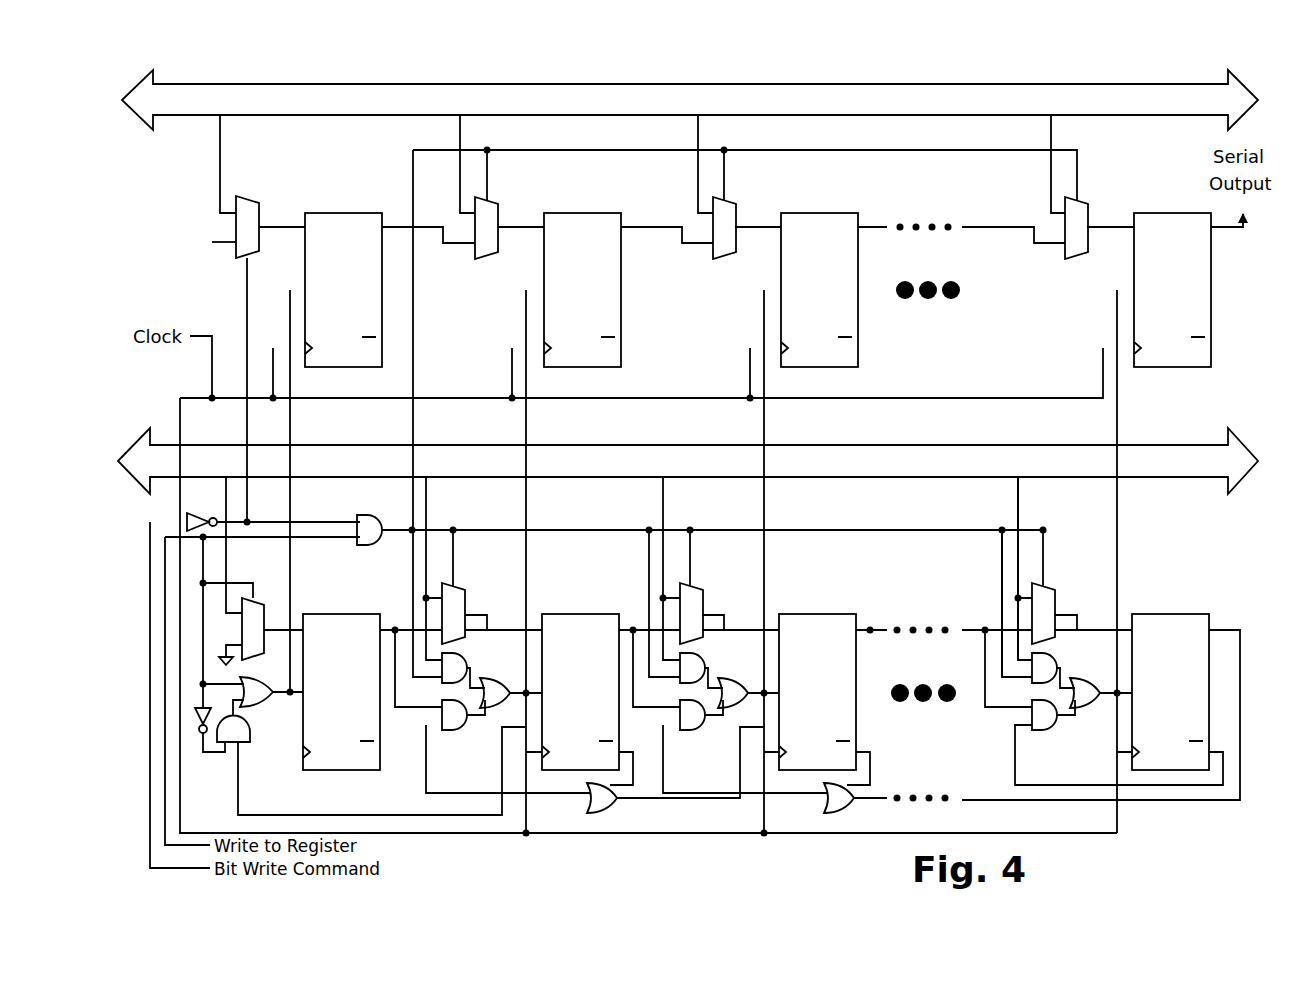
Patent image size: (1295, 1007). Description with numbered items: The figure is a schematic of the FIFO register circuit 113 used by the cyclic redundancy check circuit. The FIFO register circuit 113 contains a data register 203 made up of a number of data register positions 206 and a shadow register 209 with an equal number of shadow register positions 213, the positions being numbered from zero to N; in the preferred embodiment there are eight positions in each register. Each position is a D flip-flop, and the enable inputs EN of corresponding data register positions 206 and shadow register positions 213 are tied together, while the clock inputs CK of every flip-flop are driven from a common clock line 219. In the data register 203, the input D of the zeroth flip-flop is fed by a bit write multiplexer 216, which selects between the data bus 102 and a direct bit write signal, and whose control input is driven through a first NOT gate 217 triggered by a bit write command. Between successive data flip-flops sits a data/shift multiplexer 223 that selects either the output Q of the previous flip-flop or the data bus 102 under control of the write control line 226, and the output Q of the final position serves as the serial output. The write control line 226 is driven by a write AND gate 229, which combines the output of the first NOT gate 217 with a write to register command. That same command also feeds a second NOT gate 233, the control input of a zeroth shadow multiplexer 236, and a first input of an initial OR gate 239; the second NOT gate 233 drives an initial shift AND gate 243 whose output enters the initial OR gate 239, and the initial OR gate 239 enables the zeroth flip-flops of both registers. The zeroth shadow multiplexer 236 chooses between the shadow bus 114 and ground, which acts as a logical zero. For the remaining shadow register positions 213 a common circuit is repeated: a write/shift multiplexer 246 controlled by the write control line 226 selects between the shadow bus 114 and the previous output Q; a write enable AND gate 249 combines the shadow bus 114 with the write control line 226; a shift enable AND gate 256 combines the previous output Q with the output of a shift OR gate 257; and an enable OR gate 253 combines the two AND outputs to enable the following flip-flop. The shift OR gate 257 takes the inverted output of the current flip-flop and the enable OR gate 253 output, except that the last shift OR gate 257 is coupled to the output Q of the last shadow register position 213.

The data bus 102 is at (690, 100).
The shadow bus 114 is at (688, 461).
The FIFO register circuit 113 is at (1099, 851).
The data register 203 is at (235, 290).
The data register position 206 is at (336, 211).
The shadow register 209 is at (1140, 557).
The shadow register position 213 is at (318, 611).
The bit write multiplexer 216 is at (247, 194).
The first NOT gate 217 is at (202, 511).
The common clock line 219 is at (658, 401).
The data/shift multiplexer 223 is at (489, 261).
The write control line 226 is at (1026, 153).
The write AND gate 229 is at (367, 511).
The second NOT gate 233 is at (196, 726).
The 0th shadow multiplexer 236 is at (265, 596).
The initial OR gate 239 is at (268, 708).
The initial shift AND gate 243 is at (244, 745).
The write/shift multiplexer 246 is at (470, 600).
The write enable AND gate 249 is at (460, 651).
The enable OR gate 253 is at (518, 670).
The shift enable AND gate 256 is at (446, 733).
The shift OR gate 257 is at (592, 812).